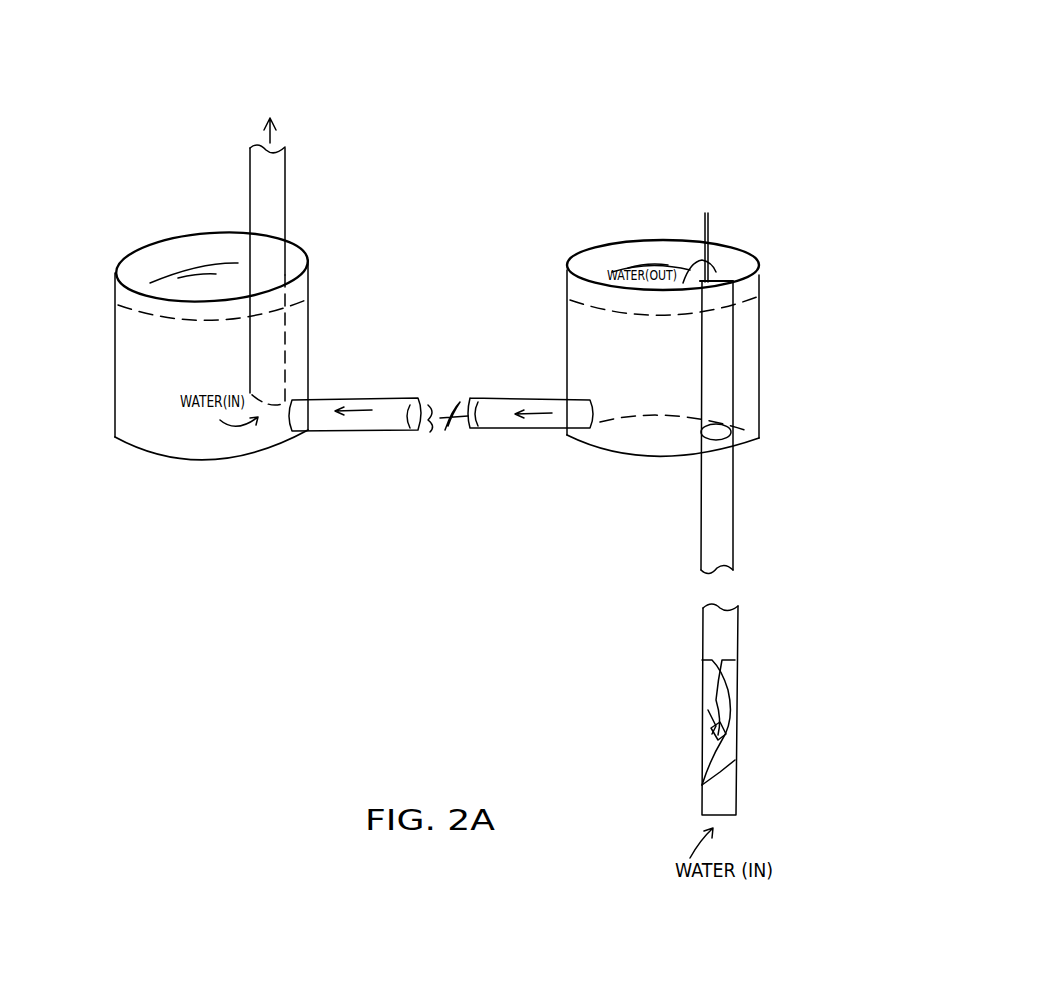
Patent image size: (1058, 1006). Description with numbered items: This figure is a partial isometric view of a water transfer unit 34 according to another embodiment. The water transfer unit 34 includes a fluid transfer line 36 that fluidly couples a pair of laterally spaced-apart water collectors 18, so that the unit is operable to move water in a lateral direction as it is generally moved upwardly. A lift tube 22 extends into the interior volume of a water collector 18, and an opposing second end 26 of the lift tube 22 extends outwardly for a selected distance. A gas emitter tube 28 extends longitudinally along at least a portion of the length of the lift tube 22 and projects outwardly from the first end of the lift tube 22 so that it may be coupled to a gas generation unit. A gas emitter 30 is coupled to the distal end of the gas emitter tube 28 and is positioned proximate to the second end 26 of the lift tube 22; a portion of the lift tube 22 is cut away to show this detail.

The water transfer unit 34 is at (643, 58).
The water collector 18 is at (112, 347).
The lift tube 22 is at (287, 204).
The fluid transfer line 36 is at (375, 397).
The gas emitter tube 28 is at (711, 222).
The second end 26 is at (738, 818).
The gas emitter 30 is at (731, 727).